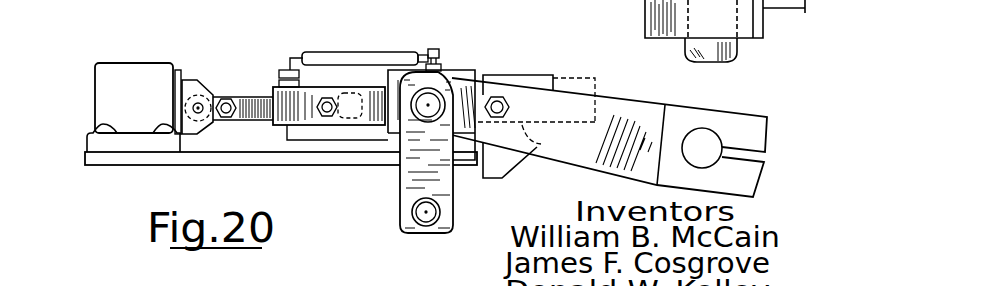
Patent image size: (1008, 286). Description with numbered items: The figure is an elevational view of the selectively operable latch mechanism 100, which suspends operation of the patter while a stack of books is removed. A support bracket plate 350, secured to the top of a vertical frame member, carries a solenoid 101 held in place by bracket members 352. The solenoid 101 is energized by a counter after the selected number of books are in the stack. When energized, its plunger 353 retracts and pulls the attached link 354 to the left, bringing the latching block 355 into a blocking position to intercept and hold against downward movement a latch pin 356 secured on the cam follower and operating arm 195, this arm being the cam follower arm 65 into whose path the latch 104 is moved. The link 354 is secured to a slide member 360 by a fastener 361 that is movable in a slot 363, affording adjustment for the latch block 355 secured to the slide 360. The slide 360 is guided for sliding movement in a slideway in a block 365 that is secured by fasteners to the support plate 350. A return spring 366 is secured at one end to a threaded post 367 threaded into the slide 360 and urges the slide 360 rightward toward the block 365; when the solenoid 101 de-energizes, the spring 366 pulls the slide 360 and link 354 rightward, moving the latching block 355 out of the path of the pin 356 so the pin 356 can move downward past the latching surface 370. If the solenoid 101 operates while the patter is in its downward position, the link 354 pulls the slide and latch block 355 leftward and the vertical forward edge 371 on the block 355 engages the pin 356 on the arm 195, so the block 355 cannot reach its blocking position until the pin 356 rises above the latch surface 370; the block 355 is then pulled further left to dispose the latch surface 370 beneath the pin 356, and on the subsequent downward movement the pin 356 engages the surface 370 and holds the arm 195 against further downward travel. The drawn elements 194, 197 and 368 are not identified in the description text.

The cam follower arm 65 is at (614, 76).
The selectively operable latch mechanism 100 is at (204, 58).
The solenoid 101 is at (113, 80).
The latch 104 is at (521, 69).
The slotted end block 194 is at (698, 137).
The cam follower and operating arm 195 is at (633, 117).
The link 197 is at (412, 180).
The support bracket plate 350 is at (201, 166).
The bracket members 352 is at (100, 142).
The plunger 353 is at (184, 80).
The link 354 is at (247, 96).
The latching block 355 is at (535, 83).
The latch pin 356 is at (510, 107).
The slide member 360 is at (288, 128).
The fastener 361 is at (330, 114).
The slot 363 is at (343, 96).
The block 365 is at (470, 68).
The return spring 366 is at (335, 52).
The threaded post 367 is at (288, 56).
The valve 368 is at (433, 48).
The latching surface 370 is at (540, 145).
The vertical forward edge 371 is at (483, 176).